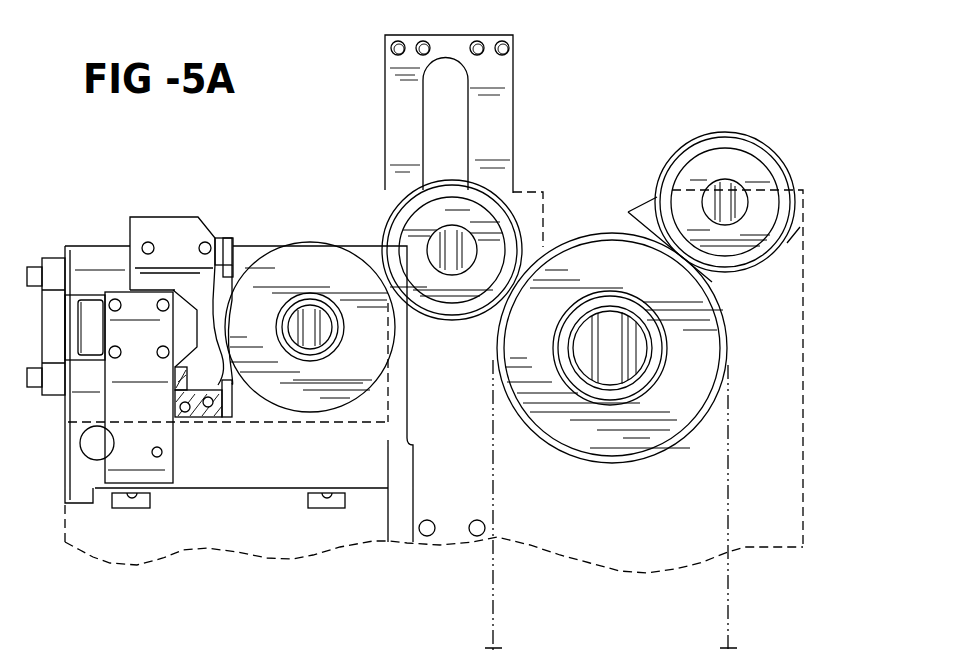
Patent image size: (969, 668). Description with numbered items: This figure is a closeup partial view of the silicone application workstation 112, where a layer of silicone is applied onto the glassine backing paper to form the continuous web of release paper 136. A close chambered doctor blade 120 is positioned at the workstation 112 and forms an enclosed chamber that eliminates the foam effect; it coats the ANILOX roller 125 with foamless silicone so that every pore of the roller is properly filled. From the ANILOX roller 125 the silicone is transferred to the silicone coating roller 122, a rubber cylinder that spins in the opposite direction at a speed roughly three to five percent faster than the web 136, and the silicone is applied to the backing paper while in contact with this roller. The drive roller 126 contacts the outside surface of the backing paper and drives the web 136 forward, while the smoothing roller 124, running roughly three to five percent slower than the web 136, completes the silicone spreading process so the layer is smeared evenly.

The silicone application workstation 112 is at (303, 105).
The close chambered doctor blade 120 is at (162, 232).
The silicone coating roller 122 is at (408, 222).
The smoothing roller 124 is at (772, 162).
The ANILOX roller 125 is at (320, 272).
The drive roller 126 is at (652, 462).
The web of release paper 136 is at (733, 590).